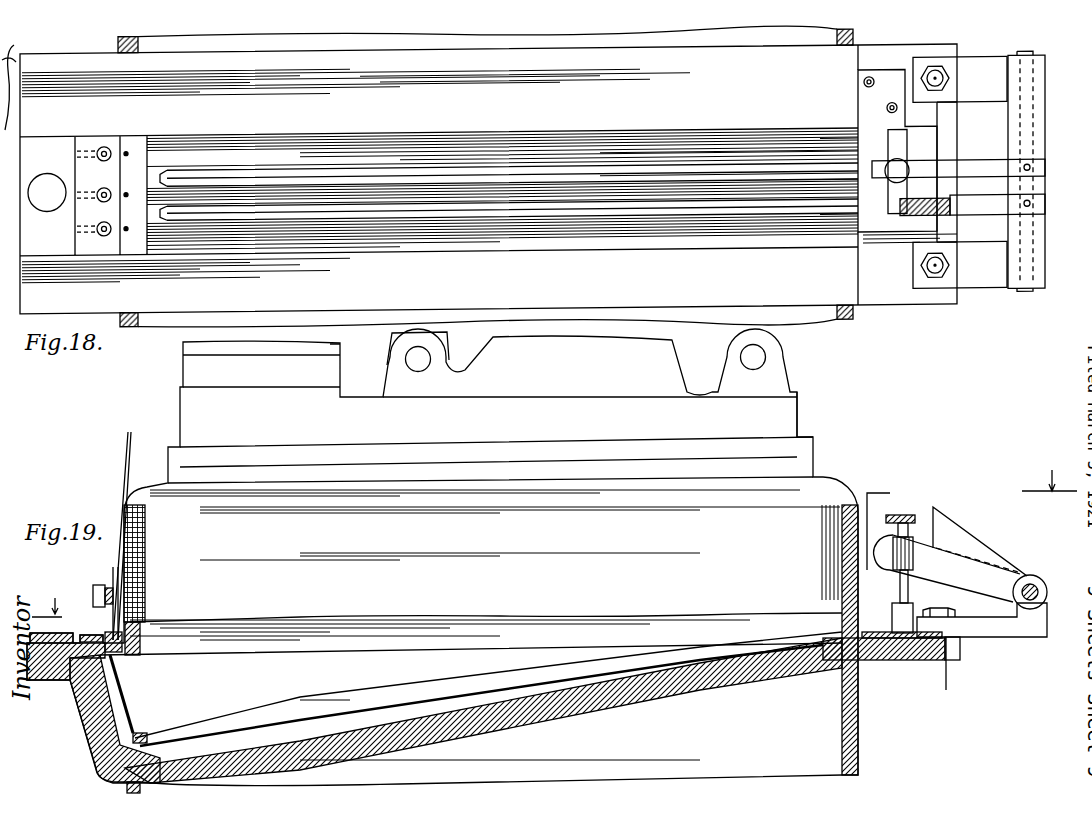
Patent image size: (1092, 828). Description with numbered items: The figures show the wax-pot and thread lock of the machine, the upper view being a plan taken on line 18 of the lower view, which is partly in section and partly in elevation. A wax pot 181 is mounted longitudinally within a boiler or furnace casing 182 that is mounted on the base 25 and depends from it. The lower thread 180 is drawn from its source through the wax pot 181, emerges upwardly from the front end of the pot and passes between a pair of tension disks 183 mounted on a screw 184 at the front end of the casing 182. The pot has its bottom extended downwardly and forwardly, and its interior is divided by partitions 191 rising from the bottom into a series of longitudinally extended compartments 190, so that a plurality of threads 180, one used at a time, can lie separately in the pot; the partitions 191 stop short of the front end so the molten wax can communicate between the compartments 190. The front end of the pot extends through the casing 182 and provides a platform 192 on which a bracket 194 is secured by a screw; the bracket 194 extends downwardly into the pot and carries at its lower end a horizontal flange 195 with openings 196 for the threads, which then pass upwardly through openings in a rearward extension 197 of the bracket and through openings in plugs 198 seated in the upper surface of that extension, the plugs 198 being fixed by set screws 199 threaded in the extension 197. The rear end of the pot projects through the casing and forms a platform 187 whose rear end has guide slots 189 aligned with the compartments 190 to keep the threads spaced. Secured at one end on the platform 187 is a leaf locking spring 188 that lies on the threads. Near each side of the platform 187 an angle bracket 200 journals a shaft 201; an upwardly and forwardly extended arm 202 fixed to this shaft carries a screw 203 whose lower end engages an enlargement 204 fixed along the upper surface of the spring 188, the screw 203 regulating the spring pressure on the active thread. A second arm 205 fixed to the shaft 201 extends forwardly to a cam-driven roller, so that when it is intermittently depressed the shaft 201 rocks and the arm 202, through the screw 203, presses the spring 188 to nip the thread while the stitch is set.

In FIG. 19, the section line 18 is at (554, 543).
In FIG. 19, the base 25 is at (817, 441).
In FIG. 18, the lower thread 180 is at (633, 232).
In FIG. 19, the lower thread 180 is at (955, 682).
In FIG. 19, the wax pot 181 is at (625, 695).
In FIG. 19, the boiler or furnace casing 182 is at (475, 590).
In FIG. 19, the tension disks 183 is at (113, 575).
In FIG. 19, the screw 184 is at (93, 591).
In FIG. 18, the platform 187 is at (897, 296).
In FIG. 19, the platform 187 is at (895, 665).
In FIG. 18, the leaf locking spring 188 is at (862, 145).
In FIG. 19, the leaf locking spring 188 is at (880, 632).
In FIG. 18, the guide slots 189 is at (960, 200).
In FIG. 18, the compartments 190 is at (428, 200).
In FIG. 18, the partitions 191 is at (258, 217).
In FIG. 19, the partitions 191 is at (267, 705).
In FIG. 19, the platform 192 is at (50, 680).
In FIG. 19, the bracket 194 is at (117, 695).
In FIG. 19, the flange 195 is at (140, 737).
In FIG. 19, the openings 196 is at (97, 758).
In FIG. 19, the rearward extension 197 is at (135, 660).
In FIG. 18, the plugs 198 is at (107, 241).
In FIG. 19, the plugs 198 is at (110, 630).
In FIG. 19, the set screws 199 is at (122, 612).
In FIG. 18, the angle bracket 200 is at (980, 285).
In FIG. 19, the angle bracket 200 is at (1000, 630).
In FIG. 18, the shaft 201 is at (1028, 300).
In FIG. 19, the shaft 201 is at (1031, 578).
In FIG. 18, the arm 202 is at (983, 172).
In FIG. 19, the arm 202 is at (962, 583).
In FIG. 18, the screw 203 is at (905, 182).
In FIG. 19, the screw 203 is at (897, 583).
In FIG. 18, the enlargement 204 is at (893, 194).
In FIG. 19, the enlargement 204 is at (893, 615).
In FIG. 18, the arm 205 is at (913, 226).
In FIG. 19, the arm 205 is at (965, 535).